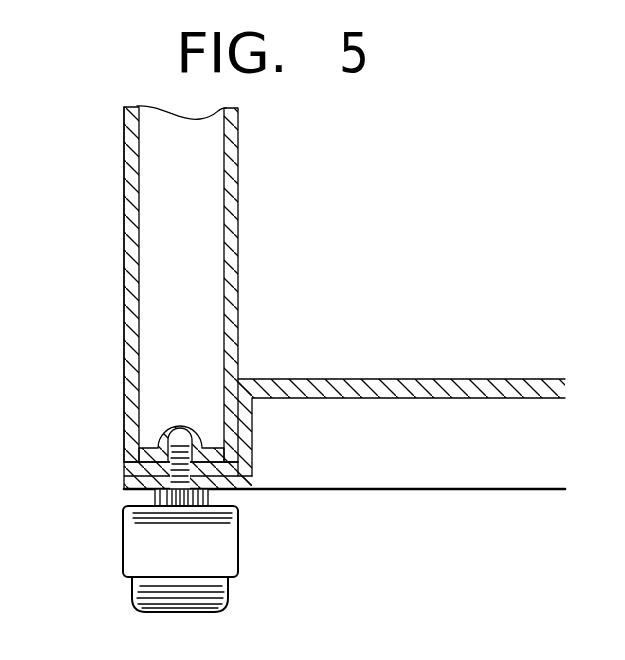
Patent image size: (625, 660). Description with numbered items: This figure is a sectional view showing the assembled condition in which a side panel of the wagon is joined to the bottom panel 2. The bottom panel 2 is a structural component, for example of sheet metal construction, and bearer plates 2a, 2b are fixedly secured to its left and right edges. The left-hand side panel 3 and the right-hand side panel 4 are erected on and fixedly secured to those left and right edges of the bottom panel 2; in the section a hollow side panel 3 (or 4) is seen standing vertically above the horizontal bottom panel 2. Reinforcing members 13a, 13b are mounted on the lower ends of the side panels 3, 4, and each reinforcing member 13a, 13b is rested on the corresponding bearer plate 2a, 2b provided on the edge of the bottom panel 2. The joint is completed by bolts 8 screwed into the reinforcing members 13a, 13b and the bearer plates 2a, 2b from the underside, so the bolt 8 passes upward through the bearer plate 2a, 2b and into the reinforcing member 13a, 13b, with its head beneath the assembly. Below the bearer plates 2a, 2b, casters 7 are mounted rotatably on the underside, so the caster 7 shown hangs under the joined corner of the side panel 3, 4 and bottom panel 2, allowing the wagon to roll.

The bottom panel 2 is at (327, 385).
The bearer plate 2a is at (230, 322).
The bearer plate 2b is at (236, 491).
The left-hand side panel 3 is at (223, 284).
The right-hand side panel 4 is at (238, 191).
The reinforcing member 13a is at (142, 454).
The reinforcing member 13b is at (140, 466).
The bolt 8 is at (177, 512).
The caster 7 is at (229, 604).